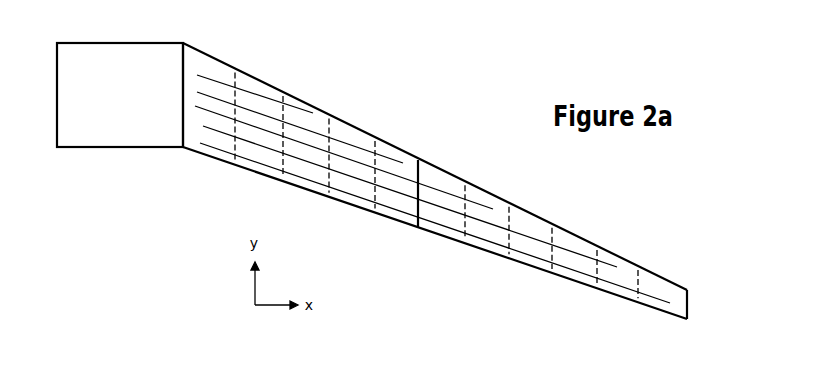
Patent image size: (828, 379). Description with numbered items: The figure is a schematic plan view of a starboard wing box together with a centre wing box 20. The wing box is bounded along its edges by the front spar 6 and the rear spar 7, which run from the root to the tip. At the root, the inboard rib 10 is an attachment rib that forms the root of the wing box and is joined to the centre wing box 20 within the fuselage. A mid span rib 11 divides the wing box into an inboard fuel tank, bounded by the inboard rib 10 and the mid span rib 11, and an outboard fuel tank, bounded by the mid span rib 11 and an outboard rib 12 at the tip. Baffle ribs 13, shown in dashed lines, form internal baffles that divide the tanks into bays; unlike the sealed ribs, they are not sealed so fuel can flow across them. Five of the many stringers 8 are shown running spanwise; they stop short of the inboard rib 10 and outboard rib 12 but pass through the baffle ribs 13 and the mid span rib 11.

The centre wing box 20 is at (128, 63).
The inboard rib 10 is at (183, 115).
The front spar 6 is at (347, 123).
The rear spar 7 is at (353, 205).
The stringers 8 is at (435, 222).
The mid span rib 11 is at (423, 172).
The outboard rib 12 is at (690, 298).
The baffle ribs 13 is at (240, 100).